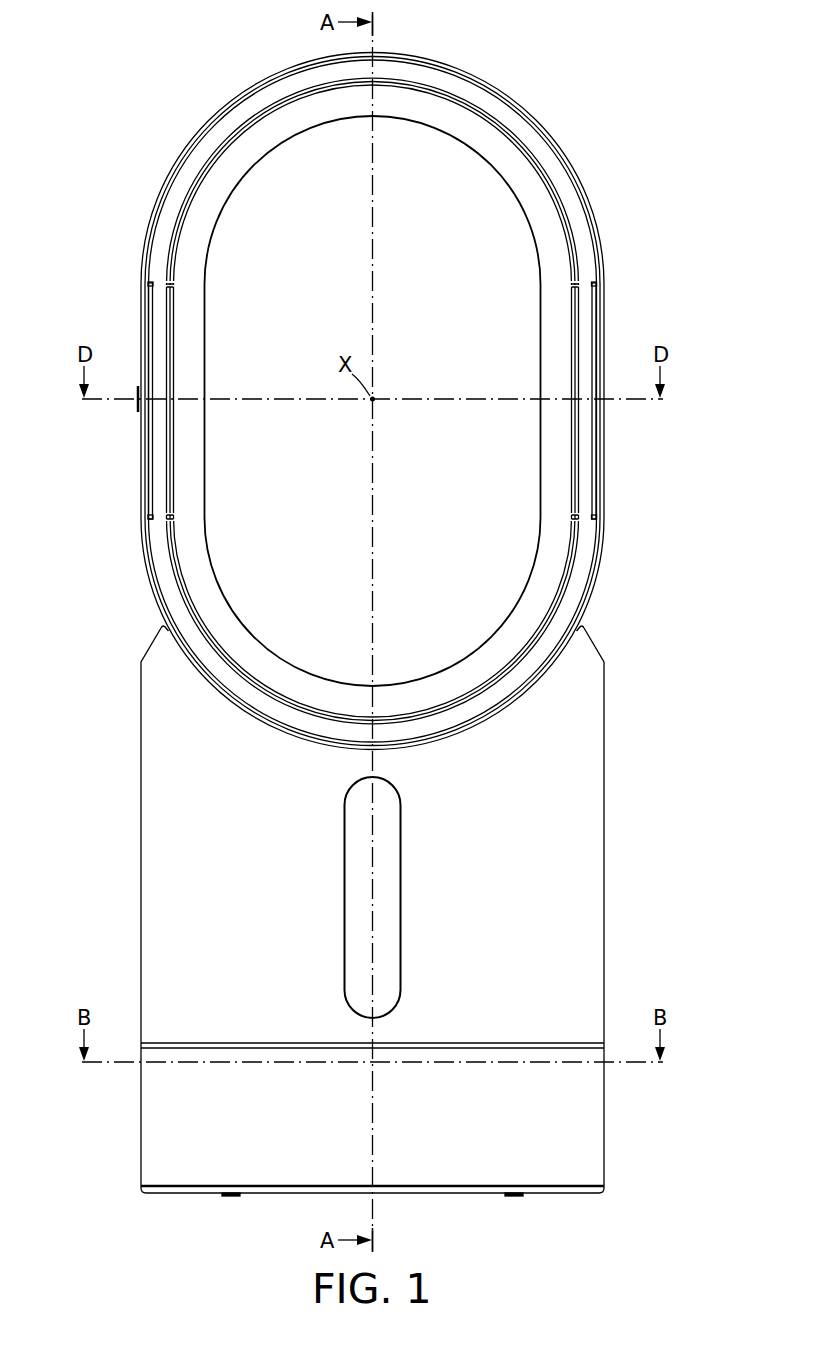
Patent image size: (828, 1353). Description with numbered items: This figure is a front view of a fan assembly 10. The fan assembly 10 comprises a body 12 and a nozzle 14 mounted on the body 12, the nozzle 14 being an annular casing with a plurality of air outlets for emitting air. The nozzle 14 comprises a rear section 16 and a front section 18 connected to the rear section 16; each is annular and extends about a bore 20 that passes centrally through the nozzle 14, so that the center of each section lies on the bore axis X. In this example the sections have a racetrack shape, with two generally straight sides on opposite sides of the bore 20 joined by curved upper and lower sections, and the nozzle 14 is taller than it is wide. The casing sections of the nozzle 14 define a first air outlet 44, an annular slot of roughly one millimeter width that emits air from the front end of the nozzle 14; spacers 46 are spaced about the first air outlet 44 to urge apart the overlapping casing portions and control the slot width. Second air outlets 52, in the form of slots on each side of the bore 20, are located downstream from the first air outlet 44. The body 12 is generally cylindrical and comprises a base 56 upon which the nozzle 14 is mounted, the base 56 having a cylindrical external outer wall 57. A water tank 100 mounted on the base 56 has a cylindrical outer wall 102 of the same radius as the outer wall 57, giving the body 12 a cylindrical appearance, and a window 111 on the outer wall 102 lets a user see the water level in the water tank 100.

The fan assembly 10 is at (110, 660).
The body 12 is at (381, 911).
The nozzle 14 is at (620, 197).
The rear section 16 is at (196, 475).
The front section 18 is at (153, 531).
The bore 20 is at (278, 167).
The first air outlet 44 is at (170, 342).
The spacers 46 is at (170, 518).
The second air outlets 52 is at (150, 453).
The base 56 is at (604, 1111).
The external outer wall 57 is at (141, 1112).
The water tank 100 is at (150, 858).
The cylindrical outer wall 102 is at (604, 760).
The window 111 is at (345, 864).